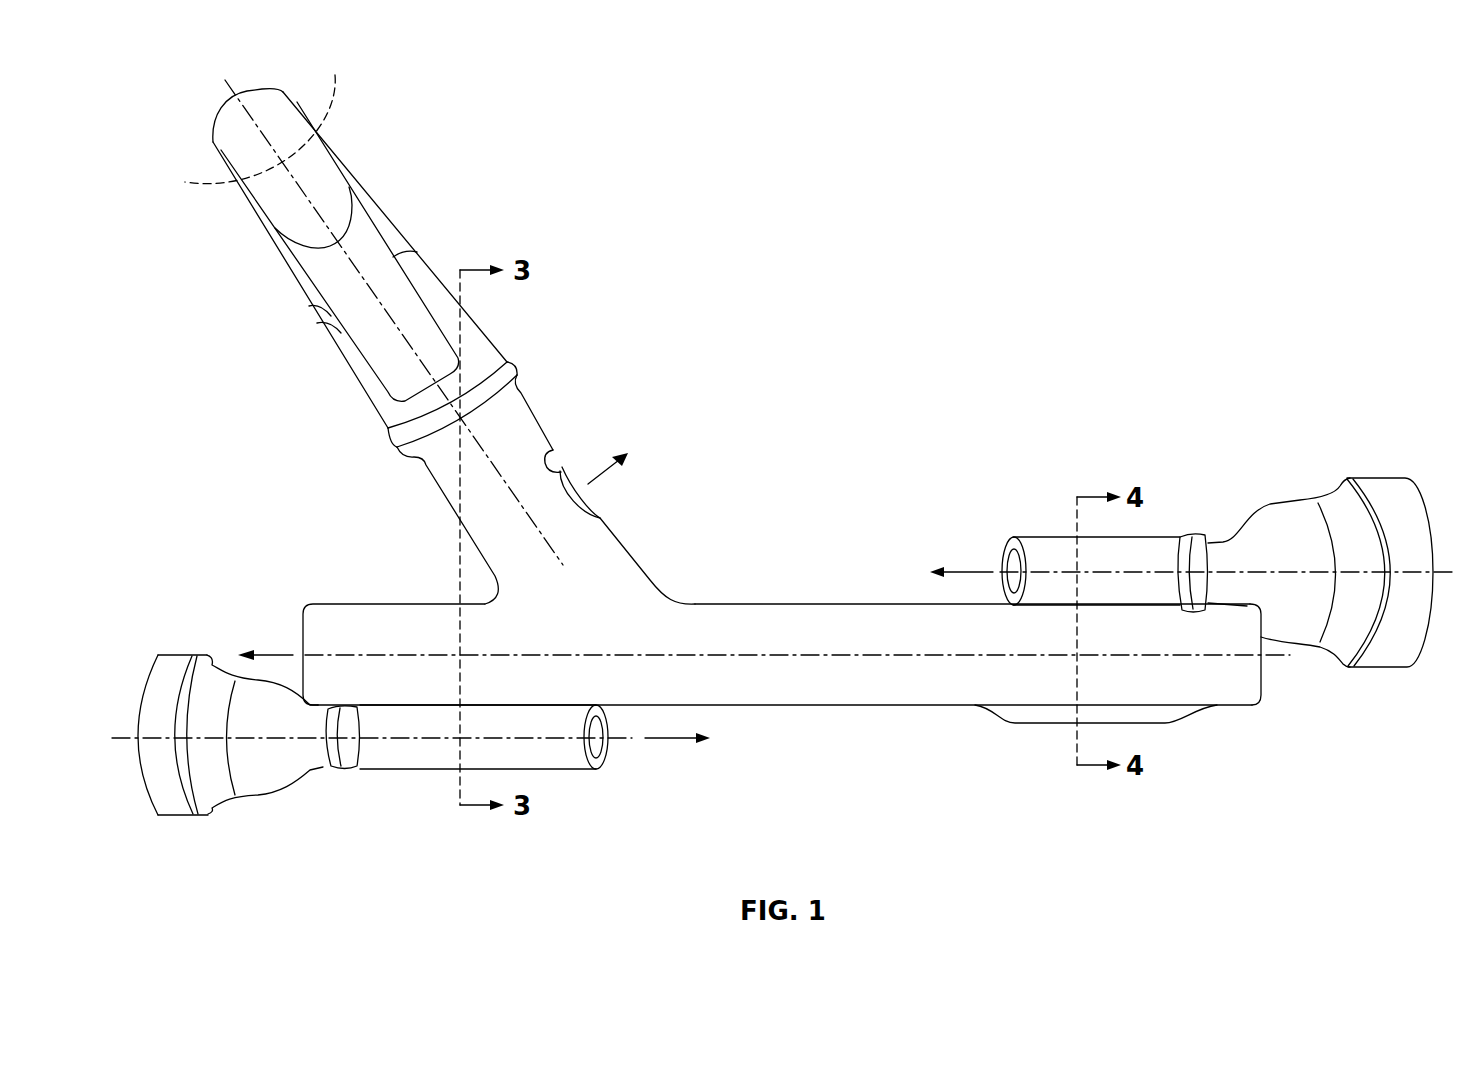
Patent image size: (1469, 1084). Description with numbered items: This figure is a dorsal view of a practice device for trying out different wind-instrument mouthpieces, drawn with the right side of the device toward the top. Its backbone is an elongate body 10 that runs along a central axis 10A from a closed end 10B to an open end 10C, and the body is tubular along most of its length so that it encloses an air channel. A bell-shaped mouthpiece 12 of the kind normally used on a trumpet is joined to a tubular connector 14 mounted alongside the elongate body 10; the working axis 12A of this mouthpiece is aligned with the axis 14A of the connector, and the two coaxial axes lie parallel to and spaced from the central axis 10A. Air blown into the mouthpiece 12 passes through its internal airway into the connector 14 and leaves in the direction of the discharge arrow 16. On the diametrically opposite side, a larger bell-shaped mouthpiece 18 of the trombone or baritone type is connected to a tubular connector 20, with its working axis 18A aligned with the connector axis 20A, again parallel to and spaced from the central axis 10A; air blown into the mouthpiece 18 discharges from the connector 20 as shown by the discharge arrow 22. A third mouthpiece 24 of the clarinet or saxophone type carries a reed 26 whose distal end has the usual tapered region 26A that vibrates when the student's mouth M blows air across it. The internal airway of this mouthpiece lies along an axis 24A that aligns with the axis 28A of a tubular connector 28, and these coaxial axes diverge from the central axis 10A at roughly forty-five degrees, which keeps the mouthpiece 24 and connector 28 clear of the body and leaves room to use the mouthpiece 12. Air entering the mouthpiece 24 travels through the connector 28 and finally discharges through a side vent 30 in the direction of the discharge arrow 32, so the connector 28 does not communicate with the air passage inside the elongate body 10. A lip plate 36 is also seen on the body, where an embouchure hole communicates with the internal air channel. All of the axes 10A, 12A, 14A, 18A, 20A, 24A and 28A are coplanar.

The elongate body 10 is at (760, 604).
The central axis 10A is at (792, 657).
The closed end 10B is at (1266, 690).
The open end 10C is at (304, 612).
The bell-shaped mouthpiece 12 is at (184, 816).
The working axis 12A is at (236, 741).
The tubular connector 14 is at (400, 772).
The axis of connector 14A is at (530, 739).
The discharge arrow 16 is at (668, 740).
The bell-shaped mouthpiece 18 is at (1383, 478).
The working axis 18A is at (1310, 573).
The tubular connector 20 is at (1035, 536).
The axis of connector 20A is at (1127, 573).
The discharge arrow 22 is at (970, 572).
The third mouthpiece 24 is at (370, 182).
The axis of mouthpiece 24A is at (357, 267).
The reed 26 is at (327, 302).
The tapered region 26A is at (290, 212).
The tubular connector 28 is at (424, 470).
The axis of connector 28A is at (507, 487).
The side vent 30 is at (550, 447).
The discharge arrow 32 is at (603, 474).
The lip plate 36 is at (1163, 724).
The student's mouth M is at (338, 95).